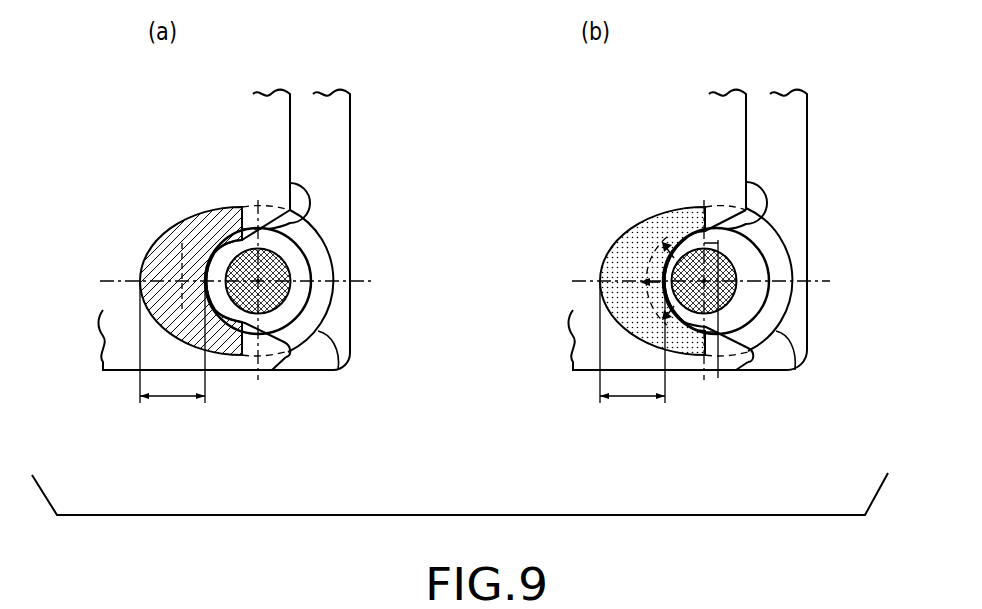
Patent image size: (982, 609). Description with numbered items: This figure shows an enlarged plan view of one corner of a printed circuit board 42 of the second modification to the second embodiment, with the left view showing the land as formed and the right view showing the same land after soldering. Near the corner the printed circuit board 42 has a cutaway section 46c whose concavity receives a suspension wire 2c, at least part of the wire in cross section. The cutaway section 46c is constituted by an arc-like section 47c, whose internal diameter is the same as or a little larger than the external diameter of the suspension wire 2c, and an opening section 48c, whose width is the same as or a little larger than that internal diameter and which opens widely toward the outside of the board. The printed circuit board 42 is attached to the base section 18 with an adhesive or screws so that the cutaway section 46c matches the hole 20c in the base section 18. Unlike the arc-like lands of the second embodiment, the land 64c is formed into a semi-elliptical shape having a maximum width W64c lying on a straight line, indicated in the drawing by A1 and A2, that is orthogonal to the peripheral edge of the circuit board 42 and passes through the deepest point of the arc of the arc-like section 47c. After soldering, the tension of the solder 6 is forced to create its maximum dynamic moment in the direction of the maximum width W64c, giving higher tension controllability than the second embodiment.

The suspension wire 2c is at (822, 226).
The solder 6 is at (615, 243).
The base section 18 is at (352, 128).
The hole 20c is at (338, 366).
The printed circuit board 42 is at (268, 366).
The cutaway section 46c is at (42, 142).
The arc-like section 47c is at (680, 352).
The opening section 48c is at (757, 184).
The land 64c is at (604, 260).
The axis A1 is at (446, 290).
The axis A2 is at (619, 282).
The maximum width W64c is at (396, 368).